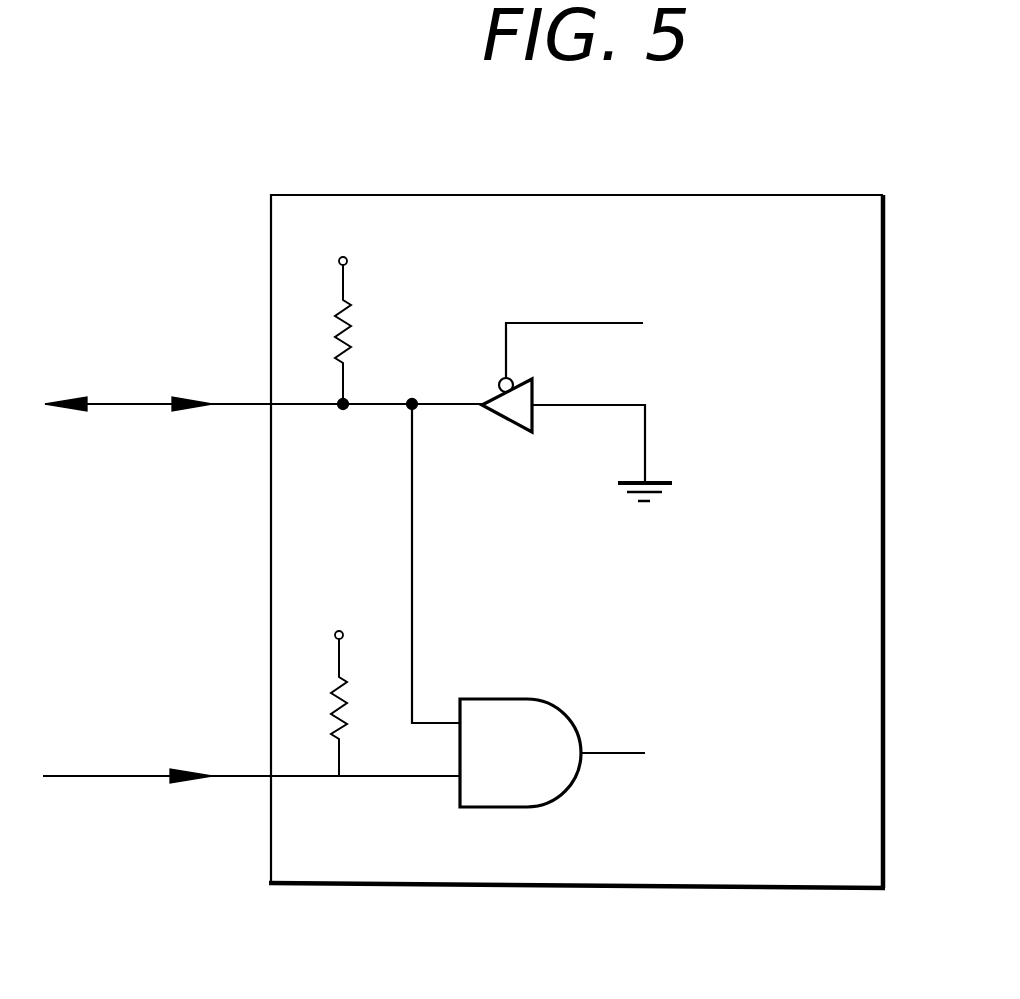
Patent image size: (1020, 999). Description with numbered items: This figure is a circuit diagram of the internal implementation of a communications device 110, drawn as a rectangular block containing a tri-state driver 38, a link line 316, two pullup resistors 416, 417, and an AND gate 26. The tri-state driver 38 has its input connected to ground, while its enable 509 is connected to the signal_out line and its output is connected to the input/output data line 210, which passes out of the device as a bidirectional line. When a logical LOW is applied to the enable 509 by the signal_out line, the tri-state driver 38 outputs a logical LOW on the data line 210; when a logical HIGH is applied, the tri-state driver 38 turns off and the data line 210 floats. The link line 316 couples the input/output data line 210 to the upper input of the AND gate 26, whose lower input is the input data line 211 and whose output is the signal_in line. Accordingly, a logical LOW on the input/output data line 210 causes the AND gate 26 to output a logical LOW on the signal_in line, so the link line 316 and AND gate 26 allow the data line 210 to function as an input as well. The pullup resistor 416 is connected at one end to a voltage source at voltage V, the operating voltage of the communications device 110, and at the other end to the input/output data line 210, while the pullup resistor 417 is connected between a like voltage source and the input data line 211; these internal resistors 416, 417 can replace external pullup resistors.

The communications device 110 is at (757, 888).
The input/output data line 210 is at (268, 406).
The input data line 211 is at (266, 778).
The link line 316 is at (410, 530).
The pullup resistor 416 is at (335, 326).
The pullup resistor 417 is at (330, 700).
The enable 509 is at (500, 379).
The tri-state driver 38 is at (510, 430).
The AND gate 26 is at (508, 808).